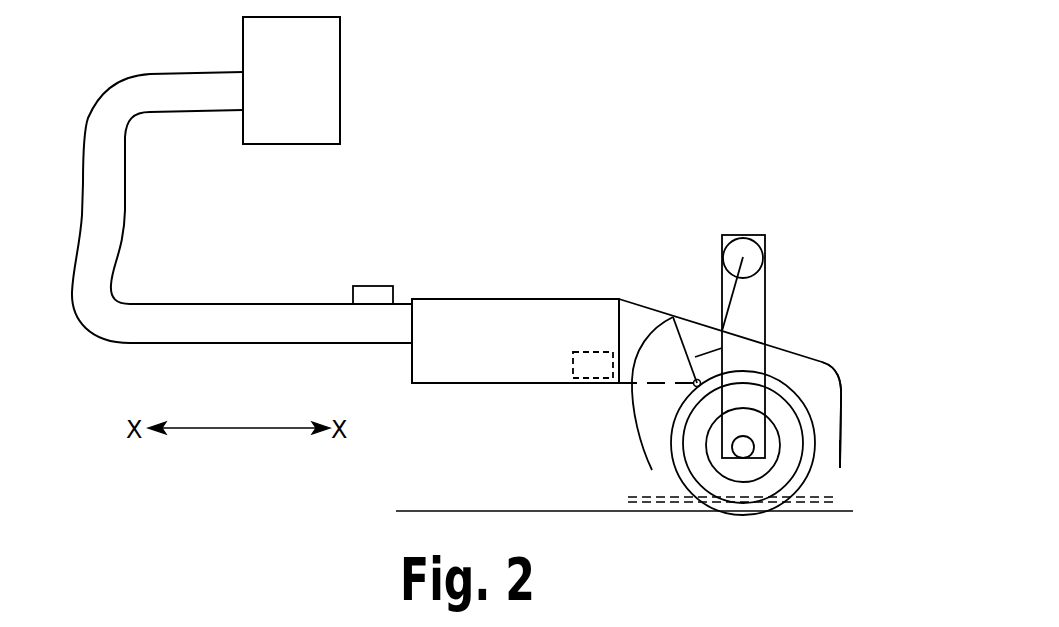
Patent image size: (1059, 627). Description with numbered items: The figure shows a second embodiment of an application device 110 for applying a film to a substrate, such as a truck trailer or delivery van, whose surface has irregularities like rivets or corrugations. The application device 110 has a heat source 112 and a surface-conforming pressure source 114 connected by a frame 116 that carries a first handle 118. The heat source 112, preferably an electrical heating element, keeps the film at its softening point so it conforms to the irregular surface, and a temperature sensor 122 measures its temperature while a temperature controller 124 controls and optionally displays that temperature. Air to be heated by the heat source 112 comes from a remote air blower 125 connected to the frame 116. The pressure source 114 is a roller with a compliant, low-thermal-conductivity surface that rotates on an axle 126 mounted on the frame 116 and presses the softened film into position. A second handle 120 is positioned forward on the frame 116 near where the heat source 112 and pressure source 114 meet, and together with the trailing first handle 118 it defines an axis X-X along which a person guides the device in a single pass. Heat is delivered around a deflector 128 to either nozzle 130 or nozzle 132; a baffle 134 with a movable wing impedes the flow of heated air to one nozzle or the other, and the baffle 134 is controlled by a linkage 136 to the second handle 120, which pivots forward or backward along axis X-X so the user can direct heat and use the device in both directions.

The application device 110 is at (573, 207).
The heat source 112 is at (803, 370).
The pressure source 114 is at (717, 488).
The frame 116 is at (593, 299).
The first handle 118 is at (247, 320).
The second handle 120 is at (749, 300).
The temperature sensor 122 is at (573, 362).
The temperature controller 124 is at (370, 286).
The remote air blower 125 is at (318, 86).
The axle 126 is at (745, 450).
The deflector 128 is at (790, 387).
The nozzle 130 is at (830, 460).
The nozzle 132 is at (653, 458).
The baffle 134 is at (688, 327).
The linkage 136 is at (707, 352).